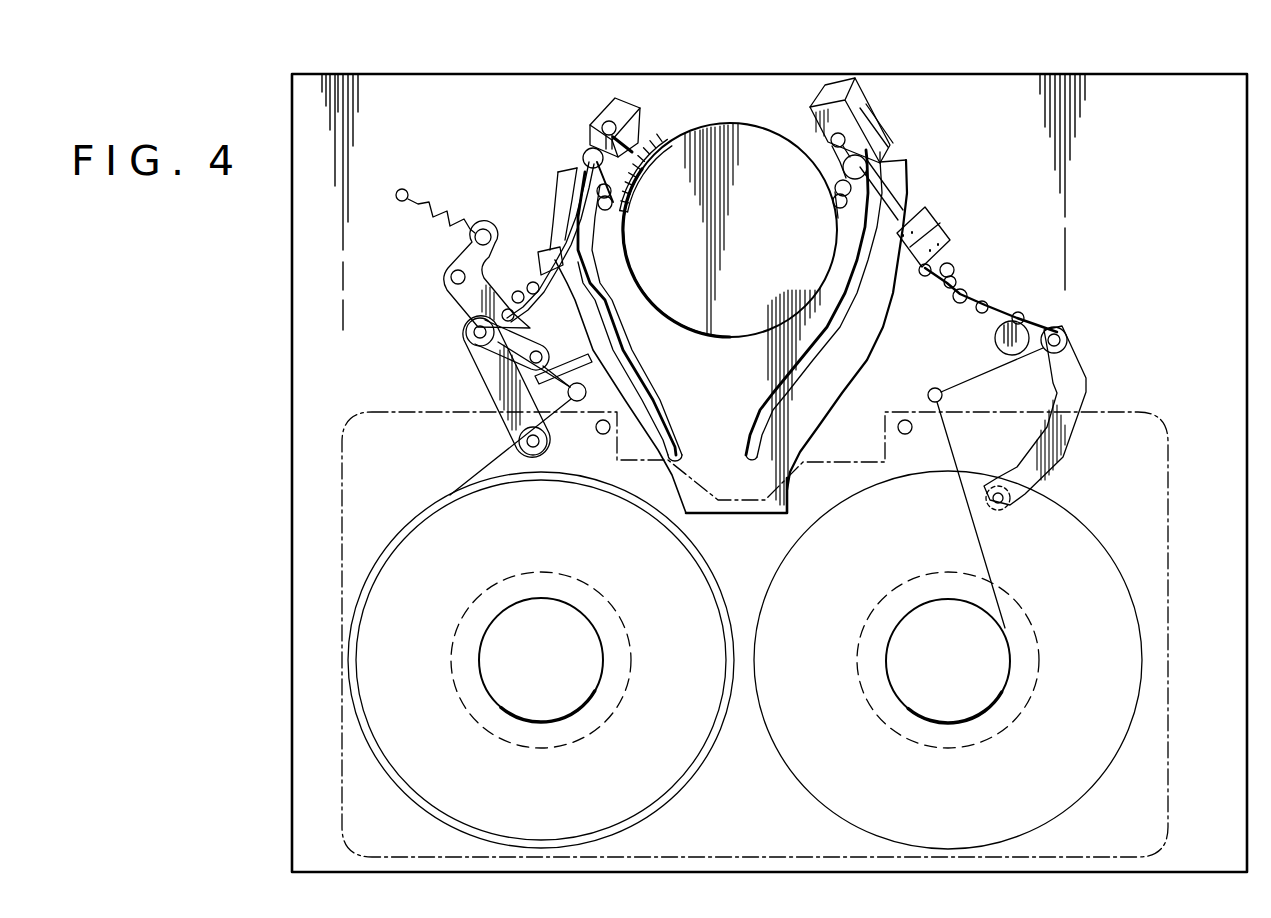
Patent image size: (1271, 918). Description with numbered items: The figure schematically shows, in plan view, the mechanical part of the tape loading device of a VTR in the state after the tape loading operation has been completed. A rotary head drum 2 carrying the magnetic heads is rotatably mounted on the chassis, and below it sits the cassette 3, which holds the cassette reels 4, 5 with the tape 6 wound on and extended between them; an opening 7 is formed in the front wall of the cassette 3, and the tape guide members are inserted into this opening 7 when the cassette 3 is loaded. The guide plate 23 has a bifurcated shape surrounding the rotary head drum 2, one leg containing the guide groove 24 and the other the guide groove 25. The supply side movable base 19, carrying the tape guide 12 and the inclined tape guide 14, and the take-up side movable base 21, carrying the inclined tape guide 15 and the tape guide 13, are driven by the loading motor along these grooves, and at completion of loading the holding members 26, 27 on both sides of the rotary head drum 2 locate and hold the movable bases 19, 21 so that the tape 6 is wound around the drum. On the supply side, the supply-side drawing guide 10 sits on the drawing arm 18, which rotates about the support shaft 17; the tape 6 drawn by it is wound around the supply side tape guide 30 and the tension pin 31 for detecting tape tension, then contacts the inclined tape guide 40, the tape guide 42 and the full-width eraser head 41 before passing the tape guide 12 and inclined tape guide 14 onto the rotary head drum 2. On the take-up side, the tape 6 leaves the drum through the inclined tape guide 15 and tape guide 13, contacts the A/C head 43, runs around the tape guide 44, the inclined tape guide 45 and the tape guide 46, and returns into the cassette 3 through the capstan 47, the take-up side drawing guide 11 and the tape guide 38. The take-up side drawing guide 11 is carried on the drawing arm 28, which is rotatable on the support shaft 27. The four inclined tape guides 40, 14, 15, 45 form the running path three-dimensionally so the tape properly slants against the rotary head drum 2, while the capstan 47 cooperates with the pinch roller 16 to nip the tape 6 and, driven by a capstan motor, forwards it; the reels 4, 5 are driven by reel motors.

The rotary head drum 2 is at (762, 150).
The cassette 3 is at (757, 813).
The cassette reel 4 is at (645, 822).
The cassette reel 5 is at (1104, 779).
The tape 6 is at (966, 536).
The opening 7 is at (735, 470).
The supply-side drawing guide 10 is at (470, 325).
The take-up side drawing guide 11 is at (1068, 338).
The tape guide 12 is at (583, 150).
The tape guide 13 is at (878, 133).
The inclined tape guide 14 is at (600, 212).
The inclined tape guide 15 is at (843, 220).
The pinch roller 16 is at (1013, 356).
The support shaft 17 is at (533, 456).
The drawing arm 18 is at (498, 393).
The supply side movable base 19 is at (597, 153).
The take-up side movable base 21 is at (845, 170).
The guide plate 23 is at (878, 306).
The guide groove 24 is at (667, 402).
The guide groove 25 is at (733, 421).
The holding member 26 is at (615, 108).
The holding member 27 is at (857, 97).
The drawing arm 28 is at (1077, 388).
The supply side tape guide 30 is at (582, 402).
The tension pin 31 is at (525, 360).
The tape guide 38 is at (930, 391).
The inclined tape guide 40 is at (478, 297).
The full-width eraser head 41 is at (540, 255).
The tape guide 42 is at (527, 282).
The A/C head 43 is at (930, 208).
The tape guide 44 is at (937, 267).
The inclined tape guide 45 is at (960, 293).
The tape guide 46 is at (983, 307).
The capstan 47 is at (1022, 316).